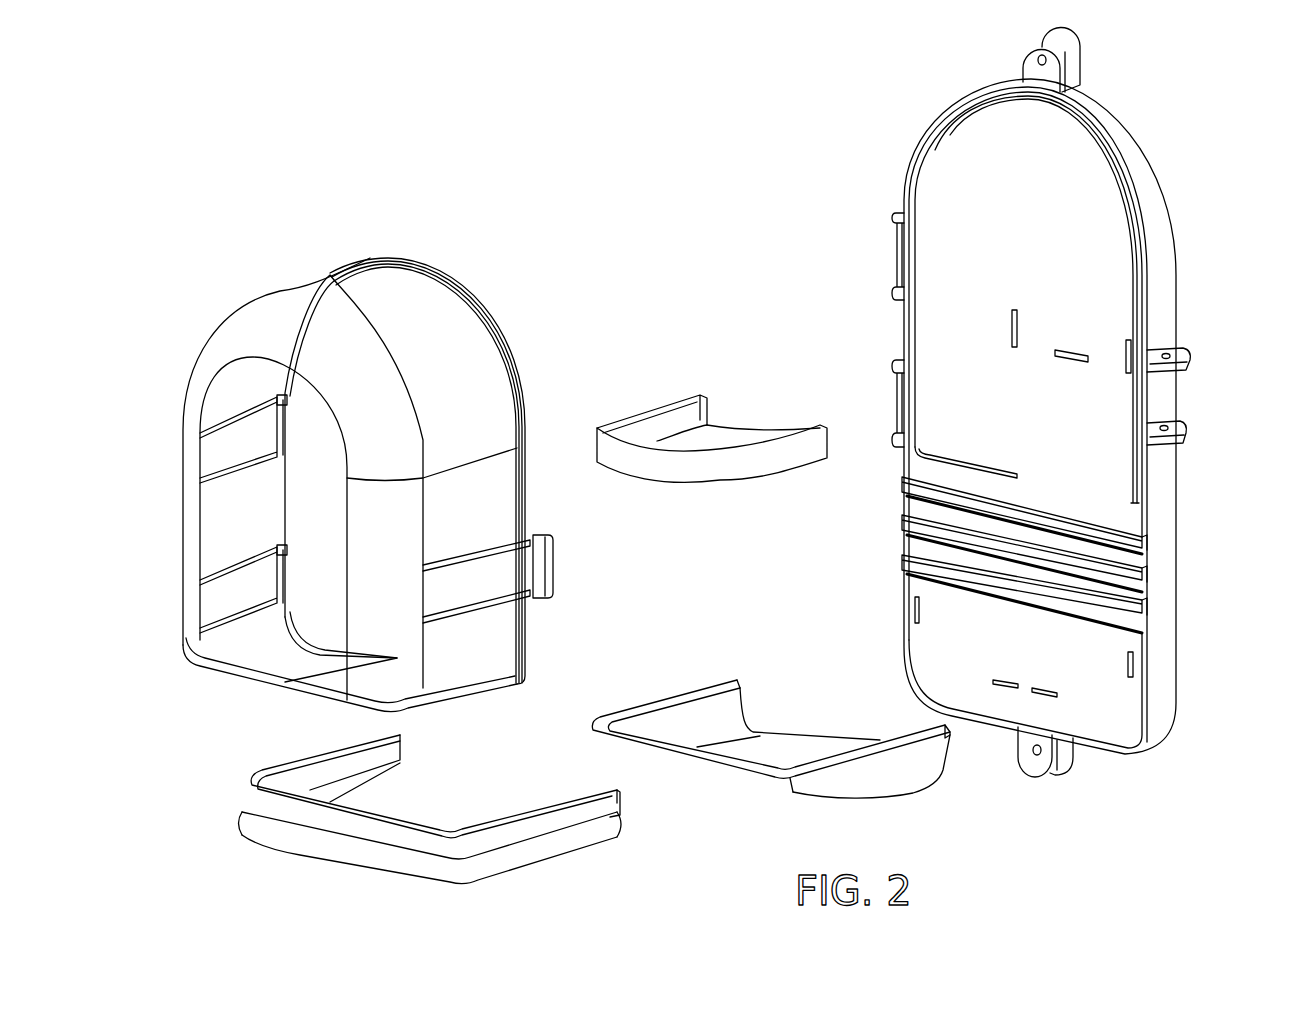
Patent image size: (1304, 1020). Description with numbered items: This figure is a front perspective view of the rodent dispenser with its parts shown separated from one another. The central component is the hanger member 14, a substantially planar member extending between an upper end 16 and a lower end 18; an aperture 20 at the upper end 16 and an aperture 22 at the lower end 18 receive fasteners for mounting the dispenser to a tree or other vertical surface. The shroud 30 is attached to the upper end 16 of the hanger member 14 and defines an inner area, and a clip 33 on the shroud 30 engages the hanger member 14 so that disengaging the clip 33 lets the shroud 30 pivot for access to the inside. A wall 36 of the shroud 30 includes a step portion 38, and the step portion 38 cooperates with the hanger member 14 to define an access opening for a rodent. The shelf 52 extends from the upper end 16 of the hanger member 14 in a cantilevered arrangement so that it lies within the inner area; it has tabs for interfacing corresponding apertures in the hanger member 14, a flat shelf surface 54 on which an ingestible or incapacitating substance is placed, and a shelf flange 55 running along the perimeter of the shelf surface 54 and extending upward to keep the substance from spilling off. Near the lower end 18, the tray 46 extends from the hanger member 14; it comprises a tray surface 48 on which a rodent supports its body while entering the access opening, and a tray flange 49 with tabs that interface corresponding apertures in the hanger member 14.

The hanger member 14 is at (1088, 444).
The upper end 16 is at (1145, 104).
The lower end 18 is at (1190, 735).
The aperture 20 is at (1022, 60).
The aperture 22 is at (1037, 777).
The shroud 30 is at (420, 459).
The clip 33 is at (575, 565).
The wall 36 is at (500, 656).
The step portion 38 is at (300, 665).
The tray 46 is at (402, 820).
The tray surface 48 is at (817, 730).
The tray flange 49 is at (258, 798).
The shelf 52 is at (712, 475).
The shelf surface 54 is at (726, 440).
The shelf flange 55 is at (660, 410).